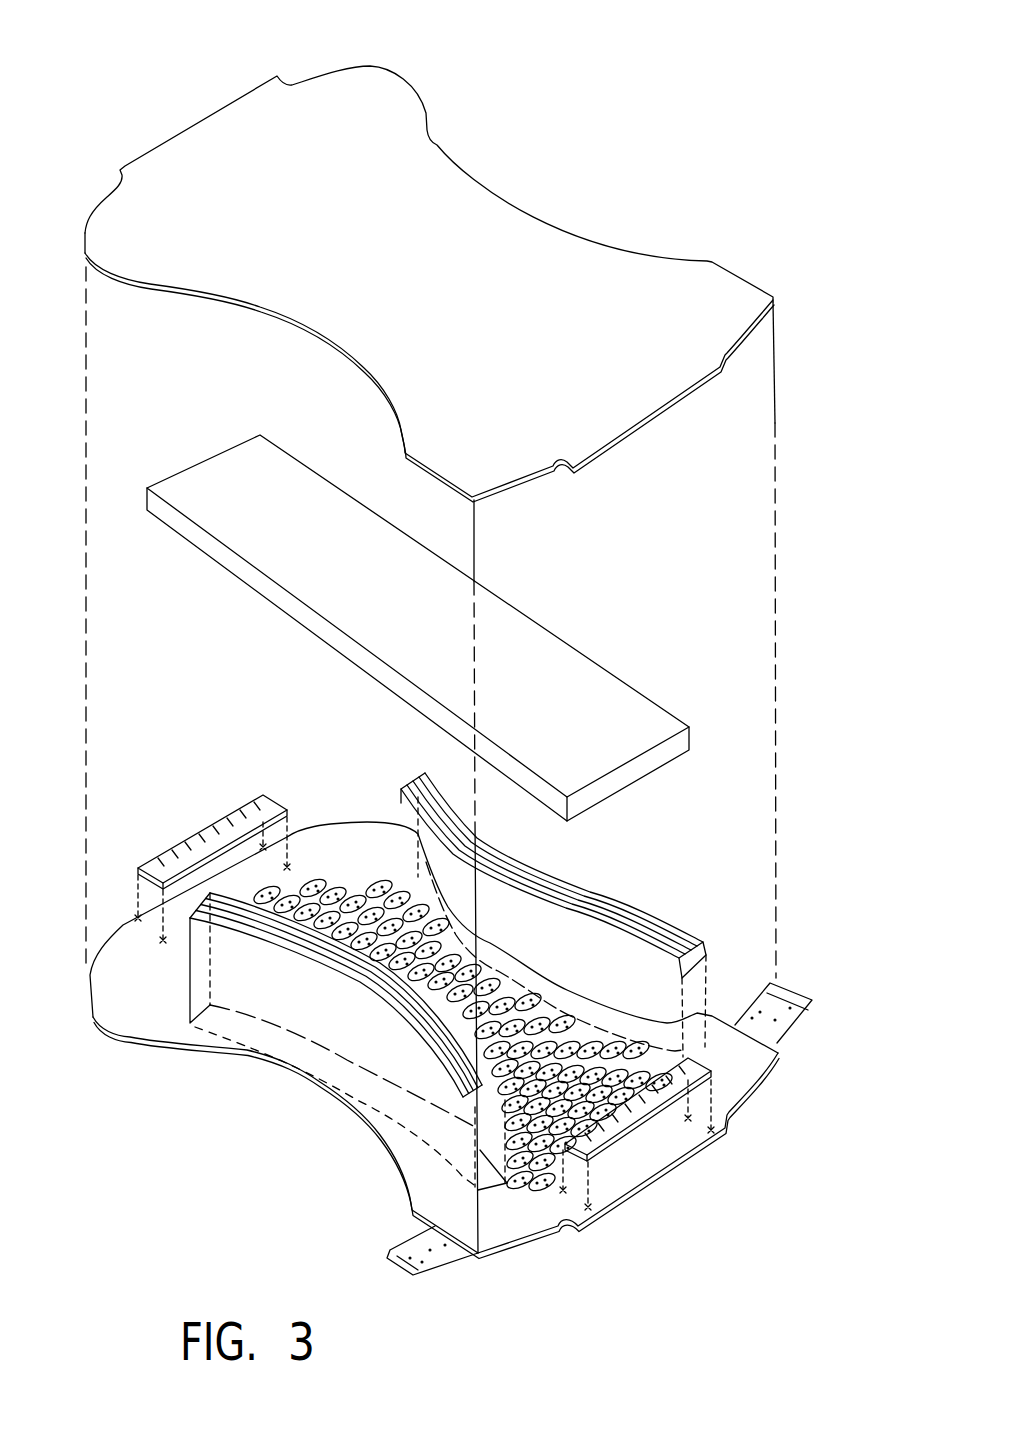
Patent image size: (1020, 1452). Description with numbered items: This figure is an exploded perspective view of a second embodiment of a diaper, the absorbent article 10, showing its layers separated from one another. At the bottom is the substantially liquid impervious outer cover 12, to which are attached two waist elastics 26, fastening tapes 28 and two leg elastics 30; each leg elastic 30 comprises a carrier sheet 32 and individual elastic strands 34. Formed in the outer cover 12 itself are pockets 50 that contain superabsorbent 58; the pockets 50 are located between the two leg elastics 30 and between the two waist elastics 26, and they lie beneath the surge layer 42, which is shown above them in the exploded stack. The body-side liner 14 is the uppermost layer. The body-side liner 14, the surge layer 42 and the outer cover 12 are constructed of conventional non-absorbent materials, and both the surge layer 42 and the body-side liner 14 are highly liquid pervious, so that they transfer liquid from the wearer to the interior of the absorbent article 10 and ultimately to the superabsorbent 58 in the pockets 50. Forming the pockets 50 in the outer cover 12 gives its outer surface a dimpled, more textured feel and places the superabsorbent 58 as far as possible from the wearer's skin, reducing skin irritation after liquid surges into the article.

The absorbent article 10 is at (692, 200).
The outer cover 12 is at (93, 1020).
The body-side liner 14 is at (368, 72).
The waist elastics 26 is at (215, 827).
The fastening tapes 28 is at (787, 1023).
The leg elastics 30 is at (190, 921).
The carrier sheet 32 is at (423, 1047).
The elastic strands 34 is at (348, 978).
The surge layer 42 is at (526, 625).
The pockets 50 is at (340, 892).
The superabsorbent 58 is at (322, 882).